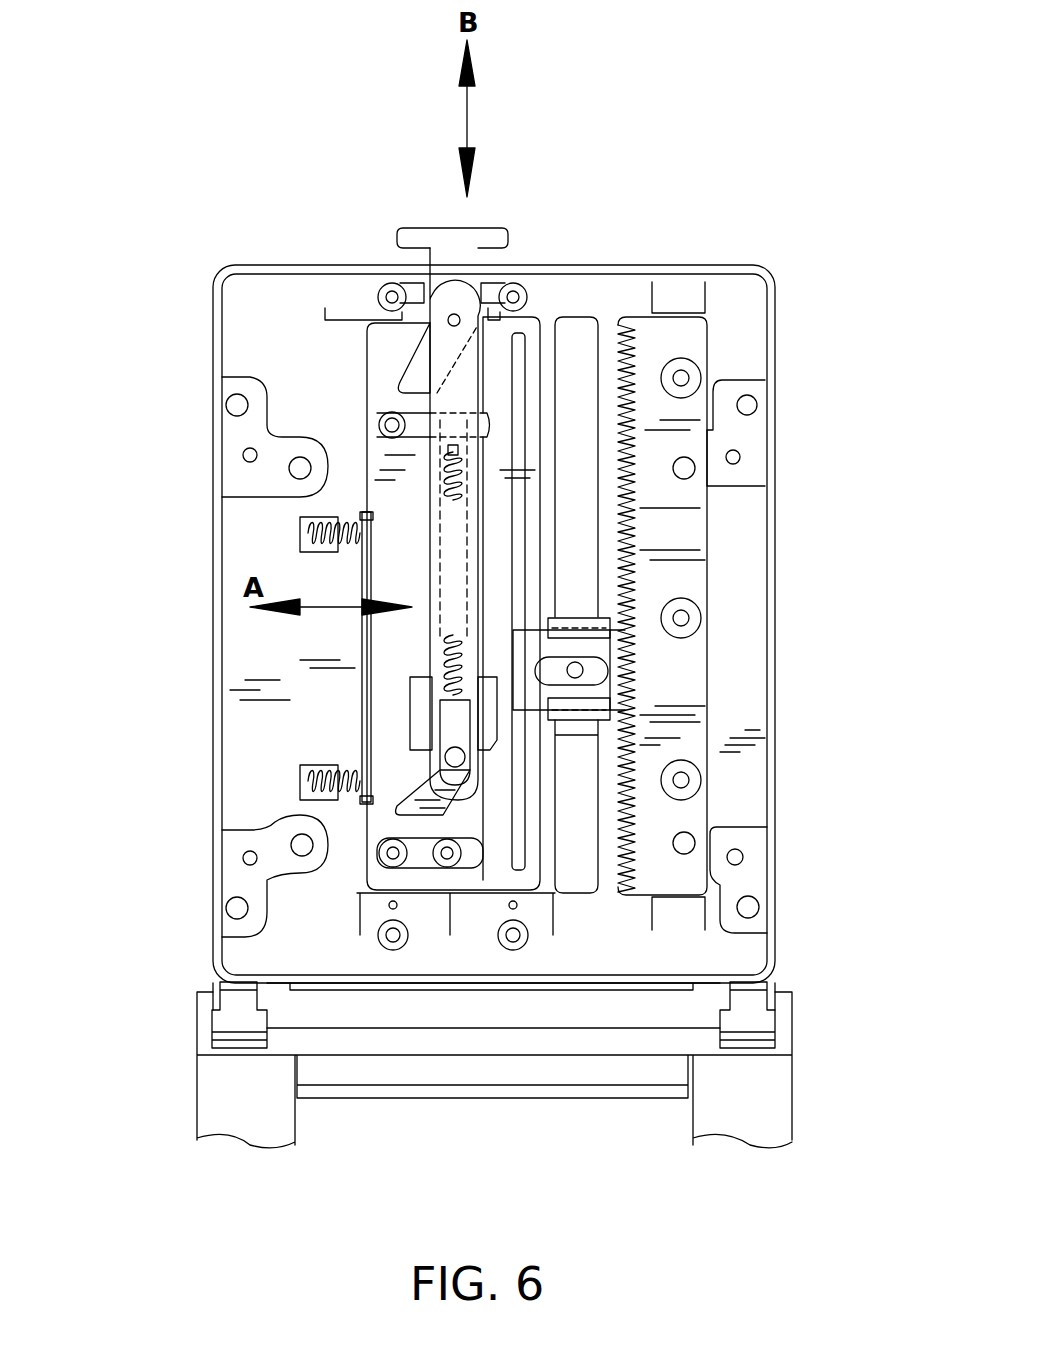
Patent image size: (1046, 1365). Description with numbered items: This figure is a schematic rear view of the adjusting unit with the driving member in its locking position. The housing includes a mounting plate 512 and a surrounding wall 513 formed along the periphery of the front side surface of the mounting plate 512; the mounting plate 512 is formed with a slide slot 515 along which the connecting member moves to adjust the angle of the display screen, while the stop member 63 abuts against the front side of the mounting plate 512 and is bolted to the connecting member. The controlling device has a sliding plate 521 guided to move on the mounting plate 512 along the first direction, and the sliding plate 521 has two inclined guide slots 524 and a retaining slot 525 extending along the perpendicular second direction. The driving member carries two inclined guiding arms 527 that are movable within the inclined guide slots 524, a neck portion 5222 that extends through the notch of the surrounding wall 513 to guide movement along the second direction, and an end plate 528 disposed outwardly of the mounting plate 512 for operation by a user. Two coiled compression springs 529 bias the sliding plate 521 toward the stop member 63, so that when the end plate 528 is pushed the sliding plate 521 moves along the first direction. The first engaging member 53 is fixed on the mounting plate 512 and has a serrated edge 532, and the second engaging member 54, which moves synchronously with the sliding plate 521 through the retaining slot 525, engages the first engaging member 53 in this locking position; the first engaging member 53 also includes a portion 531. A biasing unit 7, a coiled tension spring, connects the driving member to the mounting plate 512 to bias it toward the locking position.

The biasing unit 7 is at (445, 648).
The first engaging member 53 is at (677, 702).
The second engaging member 54 is at (627, 680).
The stop member 63 is at (600, 624).
The mounting plate 512 is at (265, 650).
The surrounding wall 513 is at (775, 318).
The slide slot 515 is at (578, 330).
The sliding plate 521 is at (365, 398).
The inclined guide slots 524 is at (403, 383).
The retaining slot 525 is at (520, 340).
The inclined guiding arms 527 is at (418, 367).
The end plate 528 is at (452, 243).
The coiled compression springs 529 is at (300, 530).
The plate portion 531 is at (690, 555).
The serrated edge 532 is at (634, 507).
The neck portion 5222 is at (455, 283).